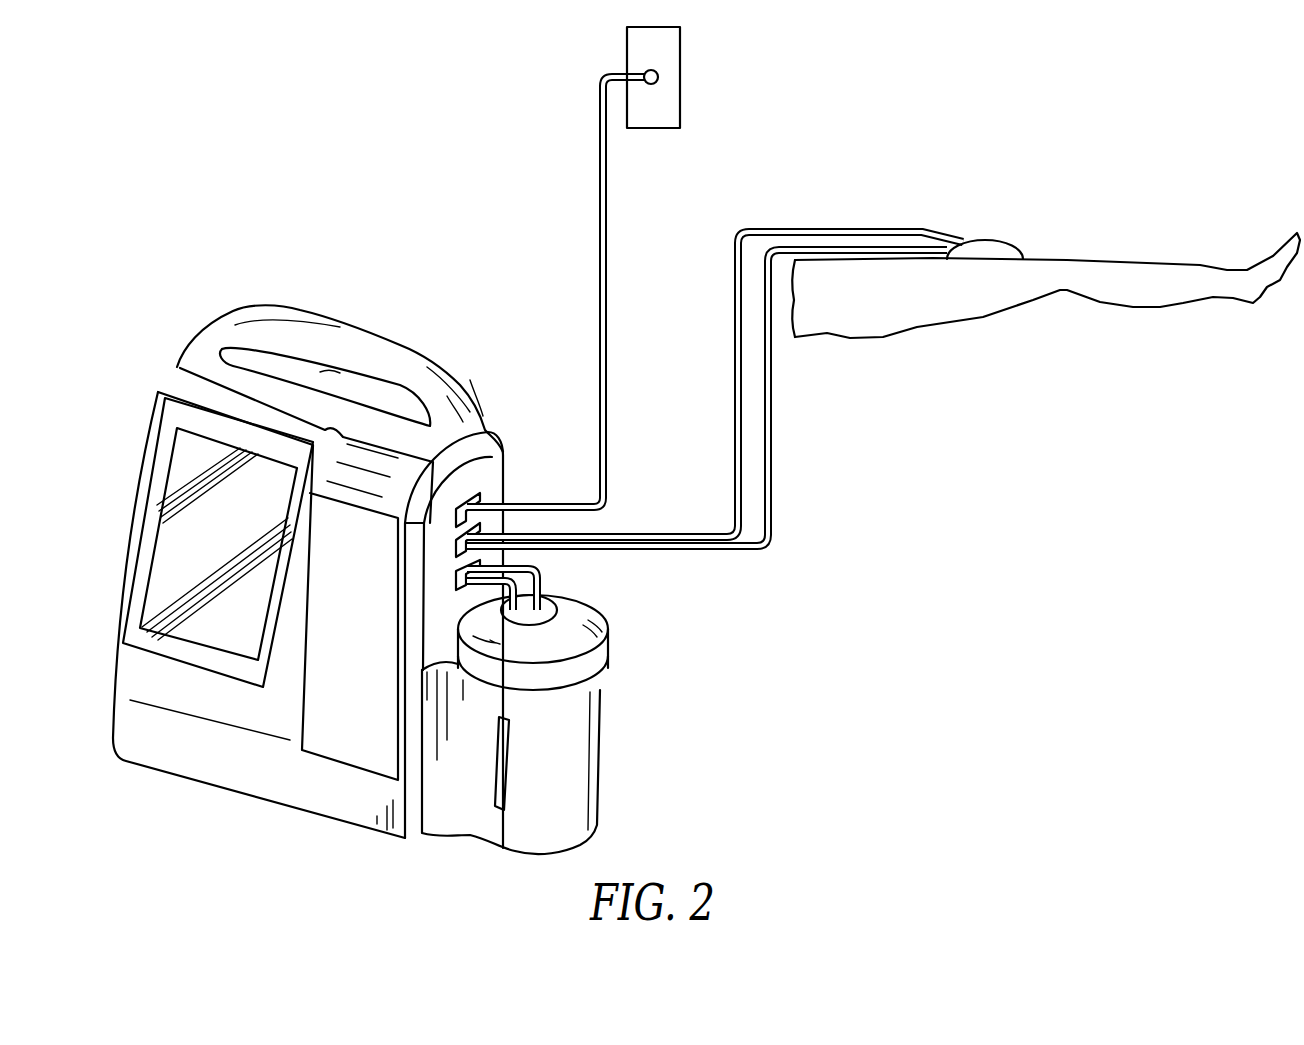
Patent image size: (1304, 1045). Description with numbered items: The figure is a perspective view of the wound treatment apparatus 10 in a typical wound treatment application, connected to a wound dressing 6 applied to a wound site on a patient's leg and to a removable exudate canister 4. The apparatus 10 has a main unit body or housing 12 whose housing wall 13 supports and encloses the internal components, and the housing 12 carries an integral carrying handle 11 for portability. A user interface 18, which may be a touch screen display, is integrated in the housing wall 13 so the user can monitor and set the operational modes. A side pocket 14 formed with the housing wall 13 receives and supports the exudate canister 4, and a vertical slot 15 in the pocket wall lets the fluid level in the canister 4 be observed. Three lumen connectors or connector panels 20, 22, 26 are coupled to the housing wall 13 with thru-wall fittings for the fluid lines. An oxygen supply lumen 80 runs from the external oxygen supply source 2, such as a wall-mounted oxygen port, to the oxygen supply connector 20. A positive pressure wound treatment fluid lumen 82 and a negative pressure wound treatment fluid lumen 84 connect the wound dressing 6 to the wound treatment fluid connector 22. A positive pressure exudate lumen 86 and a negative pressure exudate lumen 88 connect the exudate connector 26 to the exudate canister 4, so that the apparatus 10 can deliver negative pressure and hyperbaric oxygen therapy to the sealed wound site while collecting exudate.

The oxygen supply source 2 is at (665, 48).
The removable exudate canister 4 is at (568, 604).
The wound dressing 6 is at (1000, 245).
The wound treatment apparatus 10 is at (160, 296).
The carrying handle 11 is at (271, 312).
The housing 12 is at (202, 783).
The housing wall 13 is at (215, 738).
The side pocket 14 is at (597, 705).
The vertical slot 15 is at (506, 757).
The user interface 18 is at (197, 518).
The oxygen supply connector 20 is at (468, 518).
The wound treatment fluid connector 22 is at (476, 527).
The exudate connector 26 is at (467, 572).
The oxygen supply lumen 80 is at (598, 185).
The positive pressure wound treatment fluid lumen 82 is at (770, 402).
The negative pressure wound treatment fluid lumen 84 is at (733, 347).
The positive pressure exudate lumen 86 is at (545, 566).
The negative pressure exudate lumen 88 is at (482, 582).